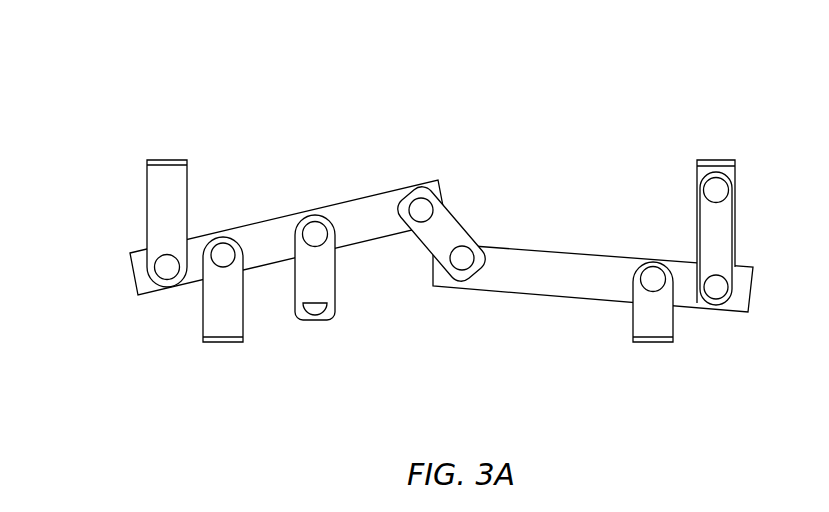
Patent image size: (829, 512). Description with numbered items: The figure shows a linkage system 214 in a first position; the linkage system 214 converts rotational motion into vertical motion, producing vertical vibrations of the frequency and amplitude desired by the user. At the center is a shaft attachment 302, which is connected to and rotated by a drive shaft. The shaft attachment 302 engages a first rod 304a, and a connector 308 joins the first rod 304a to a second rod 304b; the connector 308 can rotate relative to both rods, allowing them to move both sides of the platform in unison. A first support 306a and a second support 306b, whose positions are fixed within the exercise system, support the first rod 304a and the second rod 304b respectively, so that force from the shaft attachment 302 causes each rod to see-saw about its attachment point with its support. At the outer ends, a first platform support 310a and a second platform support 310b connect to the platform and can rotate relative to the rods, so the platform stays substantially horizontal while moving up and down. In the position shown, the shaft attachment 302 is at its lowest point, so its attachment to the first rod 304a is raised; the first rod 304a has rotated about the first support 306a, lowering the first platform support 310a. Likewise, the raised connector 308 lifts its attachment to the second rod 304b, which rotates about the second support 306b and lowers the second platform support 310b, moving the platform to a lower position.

The linkage system 214 is at (146, 80).
The shaft attachment 302 is at (305, 315).
The first rod 304a is at (373, 217).
The second rod 304b is at (557, 263).
The first support 306a is at (212, 327).
The second support 306b is at (662, 332).
The connector 308 is at (452, 237).
The first platform support 310a is at (180, 192).
The second platform support 310b is at (732, 193).